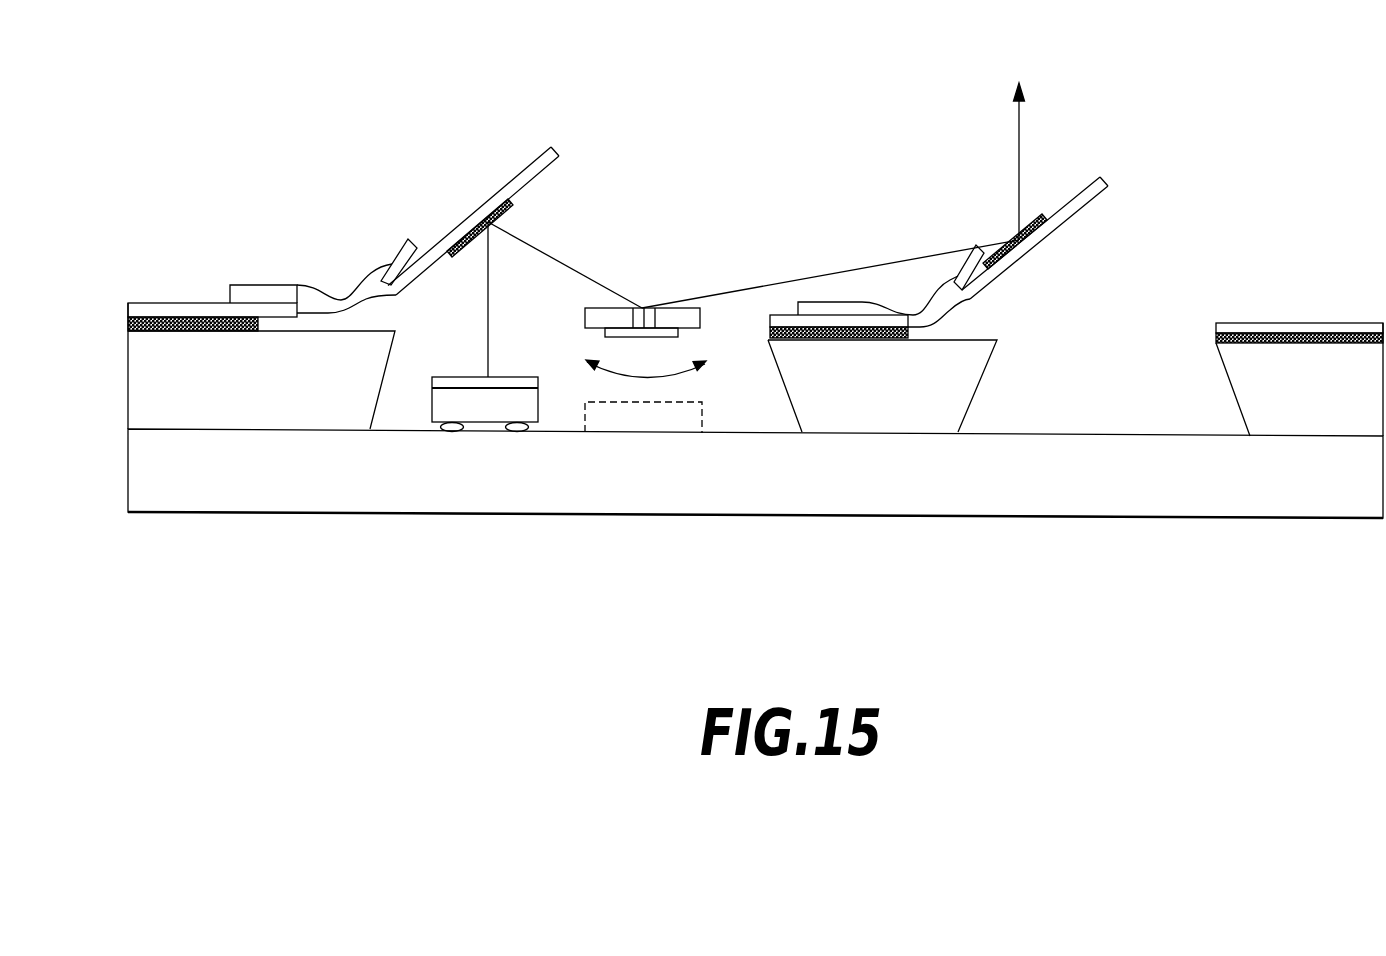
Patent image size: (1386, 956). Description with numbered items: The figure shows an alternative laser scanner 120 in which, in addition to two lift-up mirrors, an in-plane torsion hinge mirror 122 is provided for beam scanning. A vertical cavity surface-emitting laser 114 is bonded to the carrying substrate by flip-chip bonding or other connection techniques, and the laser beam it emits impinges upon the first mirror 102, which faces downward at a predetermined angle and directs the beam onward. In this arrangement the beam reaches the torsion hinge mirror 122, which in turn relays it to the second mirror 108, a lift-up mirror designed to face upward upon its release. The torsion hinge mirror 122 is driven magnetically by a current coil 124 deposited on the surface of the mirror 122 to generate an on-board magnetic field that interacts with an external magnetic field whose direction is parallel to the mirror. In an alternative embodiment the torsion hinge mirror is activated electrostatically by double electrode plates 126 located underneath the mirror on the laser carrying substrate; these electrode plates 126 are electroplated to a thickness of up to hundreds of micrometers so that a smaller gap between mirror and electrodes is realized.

The laser scanner 120 is at (238, 126).
The first mirror 102 is at (512, 207).
The second mirror 108 is at (1044, 213).
The torsion hinge mirror 122 is at (662, 290).
The current coil 124 is at (643, 338).
The vertical cavity surface-emitting laser (VCSEL) 114 is at (472, 410).
The double electrode plates 126 is at (702, 413).